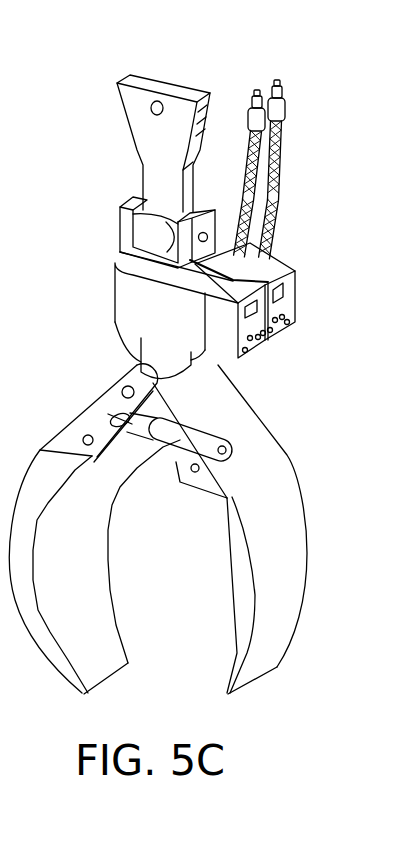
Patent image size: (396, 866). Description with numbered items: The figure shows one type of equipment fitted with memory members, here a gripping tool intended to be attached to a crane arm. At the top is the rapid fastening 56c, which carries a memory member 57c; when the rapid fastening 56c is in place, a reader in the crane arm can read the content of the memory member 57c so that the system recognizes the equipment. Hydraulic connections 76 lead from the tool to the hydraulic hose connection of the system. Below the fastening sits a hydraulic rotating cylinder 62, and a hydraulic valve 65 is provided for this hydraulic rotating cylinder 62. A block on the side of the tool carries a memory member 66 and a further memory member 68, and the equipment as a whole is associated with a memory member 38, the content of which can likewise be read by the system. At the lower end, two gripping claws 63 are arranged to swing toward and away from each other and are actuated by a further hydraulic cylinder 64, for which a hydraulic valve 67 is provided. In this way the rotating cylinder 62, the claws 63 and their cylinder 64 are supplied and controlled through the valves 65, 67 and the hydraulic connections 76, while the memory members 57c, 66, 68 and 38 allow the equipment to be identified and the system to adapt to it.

The rapid fastening 56c is at (181, 70).
The memory member 57c is at (222, 93).
The hydraulic connections 76 is at (272, 97).
The hydraulic rotating cylinder 62 is at (118, 290).
The hydraulic valve 65 is at (272, 262).
The memory member 66 is at (283, 288).
The memory member 38 is at (298, 288).
The memory member 68 is at (243, 305).
The hydraulic valve 67 is at (223, 340).
The hydraulic cylinder 64 is at (208, 430).
The gripping claws 63 is at (195, 512).